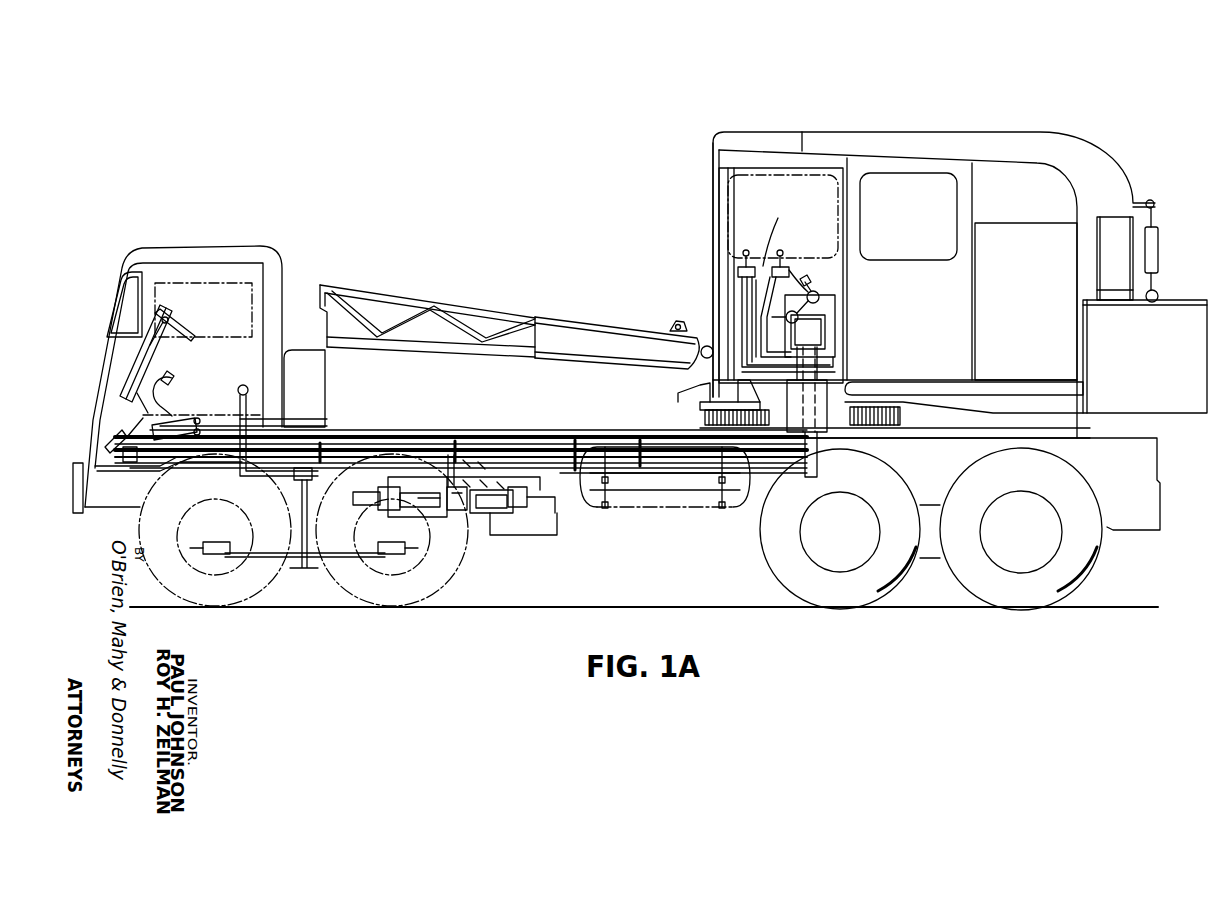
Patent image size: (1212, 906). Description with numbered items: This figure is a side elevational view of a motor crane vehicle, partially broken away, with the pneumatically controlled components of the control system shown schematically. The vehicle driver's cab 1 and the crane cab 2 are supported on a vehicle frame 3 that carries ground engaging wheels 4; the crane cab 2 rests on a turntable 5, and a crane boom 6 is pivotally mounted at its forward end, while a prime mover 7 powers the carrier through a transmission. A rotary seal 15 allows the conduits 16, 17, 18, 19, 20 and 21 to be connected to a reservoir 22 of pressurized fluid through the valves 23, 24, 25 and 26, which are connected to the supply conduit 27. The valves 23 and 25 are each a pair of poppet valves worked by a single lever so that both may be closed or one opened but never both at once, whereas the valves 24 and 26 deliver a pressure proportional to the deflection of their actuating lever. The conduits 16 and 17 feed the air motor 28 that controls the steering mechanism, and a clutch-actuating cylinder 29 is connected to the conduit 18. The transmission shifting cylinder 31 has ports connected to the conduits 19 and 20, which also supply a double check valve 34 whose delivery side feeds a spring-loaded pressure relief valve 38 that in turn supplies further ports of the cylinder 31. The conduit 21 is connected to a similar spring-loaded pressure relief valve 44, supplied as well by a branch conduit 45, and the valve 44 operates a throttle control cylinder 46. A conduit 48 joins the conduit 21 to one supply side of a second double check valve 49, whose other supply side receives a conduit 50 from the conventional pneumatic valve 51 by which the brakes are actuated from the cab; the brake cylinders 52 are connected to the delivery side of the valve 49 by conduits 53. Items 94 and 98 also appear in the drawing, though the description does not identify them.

The vehicle driver's cab 1 is at (265, 252).
The crane cab 2 is at (925, 144).
The vehicle frame 3 is at (1147, 512).
The ground engaging wheels 4 is at (220, 605).
The turntable 5 is at (900, 415).
The crane boom 6 is at (476, 308).
The prime mover 7 is at (315, 393).
The rotary seal 15 is at (818, 374).
The conduit 16 is at (118, 363).
The conduit 17 is at (122, 388).
The conduit 18 is at (404, 430).
The conduit 19 is at (507, 527).
The conduit 20 is at (447, 478).
The conduit 21 is at (220, 458).
The reservoir 22 is at (652, 498).
The valve 23 is at (752, 265).
The valve 24 is at (819, 291).
The valve 25 is at (790, 264).
The valve 26 is at (808, 332).
The supply conduit 27 is at (674, 442).
The air motor 28 is at (172, 322).
The clutch-actuating cylinder 29 is at (168, 427).
The transmission shifting cylinder 31 is at (363, 502).
The double check valve 34 is at (528, 497).
The spring-loaded pressure relief valve 38 is at (450, 512).
The spring-loaded pressure relief valve 44 is at (124, 462).
The branch conduit 45 is at (368, 442).
The throttle control cylinder 46 is at (108, 437).
The conduit 48 is at (333, 476).
The double check valve 49 is at (300, 480).
The conduit 50 is at (262, 476).
The pneumatic valve 51 is at (240, 388).
The brake cylinders 52 is at (215, 554).
The conduits 53 is at (272, 558).
The steering column 94 is at (190, 331).
The gear shift lever 98 is at (162, 374).